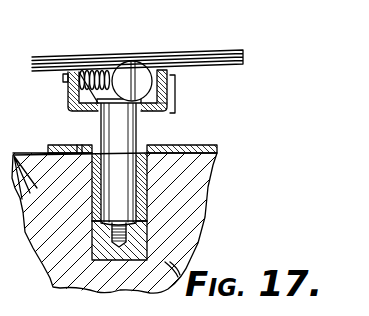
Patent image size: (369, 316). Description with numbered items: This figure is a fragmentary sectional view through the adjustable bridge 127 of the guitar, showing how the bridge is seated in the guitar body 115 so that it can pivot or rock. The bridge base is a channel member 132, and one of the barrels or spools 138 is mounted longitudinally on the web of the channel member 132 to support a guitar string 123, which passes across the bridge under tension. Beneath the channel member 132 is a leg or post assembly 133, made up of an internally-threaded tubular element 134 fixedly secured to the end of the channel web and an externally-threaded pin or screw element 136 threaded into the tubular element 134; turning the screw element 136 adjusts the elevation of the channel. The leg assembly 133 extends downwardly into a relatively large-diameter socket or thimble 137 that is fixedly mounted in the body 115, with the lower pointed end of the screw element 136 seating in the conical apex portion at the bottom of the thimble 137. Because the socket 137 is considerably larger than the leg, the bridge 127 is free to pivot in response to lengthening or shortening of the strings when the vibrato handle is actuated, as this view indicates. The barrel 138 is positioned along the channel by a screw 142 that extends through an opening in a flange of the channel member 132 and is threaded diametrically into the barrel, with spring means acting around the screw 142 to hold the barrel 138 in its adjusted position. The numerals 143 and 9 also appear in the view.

The body 115 is at (100, 283).
The string 123 is at (165, 54).
The adjustable bridge 127 is at (168, 97).
The channel member 132 is at (158, 112).
The leg or post assembly 133 is at (101, 215).
The internally-threaded tubular element 134 is at (121, 195).
The externally-threaded pin or screw element 136 is at (123, 233).
The socket or thimble 137 is at (143, 170).
The barrel or spool 138 is at (133, 62).
The screw 142 is at (65, 82).
The spring 143 is at (95, 70).
The member 9 is at (14, 146).